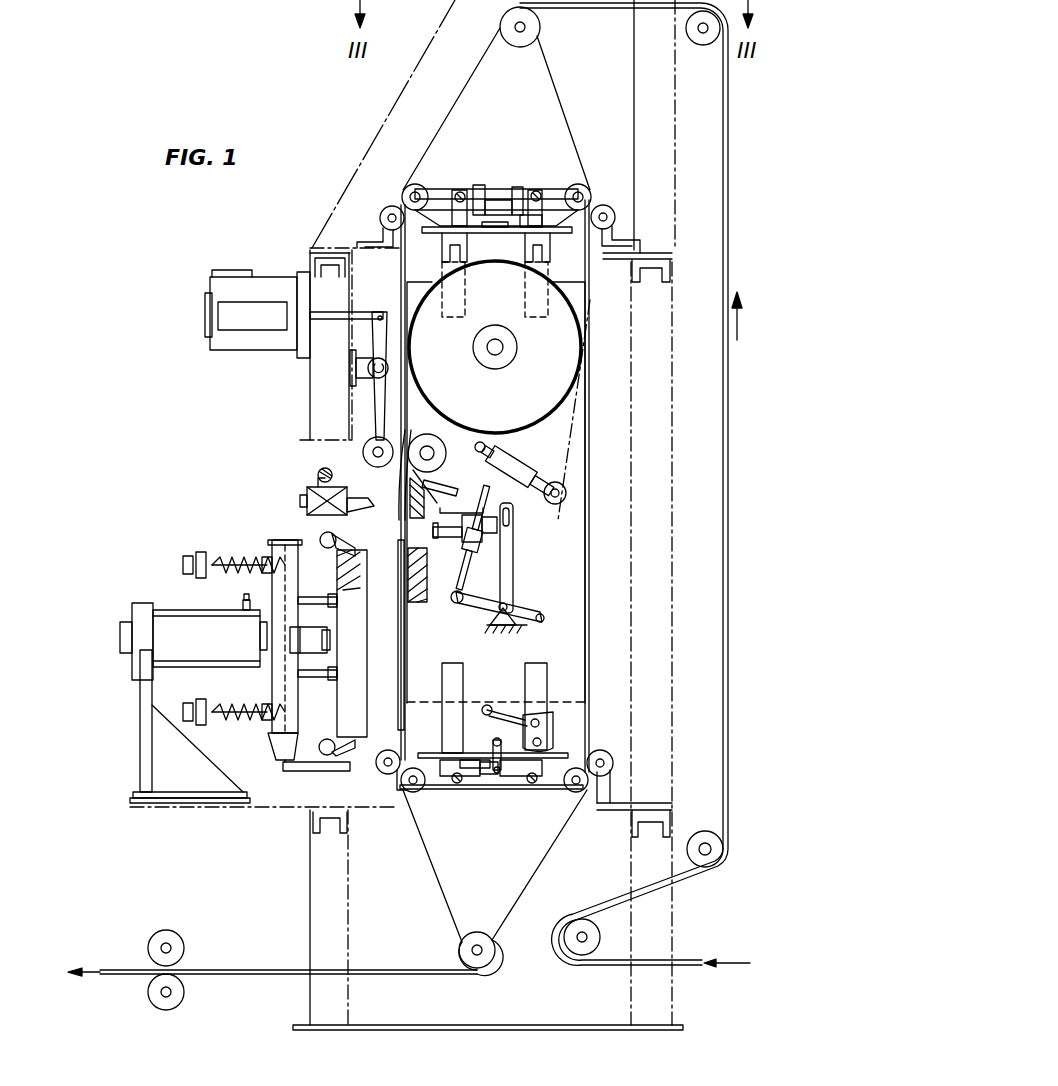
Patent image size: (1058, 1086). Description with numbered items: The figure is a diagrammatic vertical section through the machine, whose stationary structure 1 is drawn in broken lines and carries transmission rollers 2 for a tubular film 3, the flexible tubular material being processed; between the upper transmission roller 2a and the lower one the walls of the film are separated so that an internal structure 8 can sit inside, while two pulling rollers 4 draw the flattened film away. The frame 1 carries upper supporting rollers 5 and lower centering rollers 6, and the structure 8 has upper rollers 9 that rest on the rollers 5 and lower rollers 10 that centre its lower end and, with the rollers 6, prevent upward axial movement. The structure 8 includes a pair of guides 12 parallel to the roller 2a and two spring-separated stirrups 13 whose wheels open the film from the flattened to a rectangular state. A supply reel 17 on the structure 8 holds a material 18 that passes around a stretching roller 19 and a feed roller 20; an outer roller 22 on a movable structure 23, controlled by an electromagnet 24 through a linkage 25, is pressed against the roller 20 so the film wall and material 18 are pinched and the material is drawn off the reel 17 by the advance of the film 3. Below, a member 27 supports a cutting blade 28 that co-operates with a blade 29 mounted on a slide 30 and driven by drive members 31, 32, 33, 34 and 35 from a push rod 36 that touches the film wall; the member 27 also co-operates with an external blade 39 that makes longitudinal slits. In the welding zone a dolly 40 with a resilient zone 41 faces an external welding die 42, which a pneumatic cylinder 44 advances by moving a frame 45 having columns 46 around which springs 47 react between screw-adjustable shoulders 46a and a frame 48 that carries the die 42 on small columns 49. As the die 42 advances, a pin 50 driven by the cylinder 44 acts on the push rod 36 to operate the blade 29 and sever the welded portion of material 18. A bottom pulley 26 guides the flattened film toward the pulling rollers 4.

The stationary structure 1 is at (398, 92).
The transmission rollers 2 is at (703, 46).
The upper transmission roller 2a is at (540, 33).
The tubular film 3 is at (552, 115).
The pulling rollers 4 is at (184, 985).
The upper supporting rollers 5 is at (392, 206).
The lower centering rollers 6 is at (388, 750).
The internal structure 8 is at (503, 240).
The upper rollers 9 is at (428, 188).
The lower rollers 10 is at (418, 792).
The guides 12 is at (536, 189).
The stirrups 13 is at (548, 195).
The supply reel 17 is at (550, 405).
The material 18 is at (568, 455).
The stretching roller 19 is at (562, 505).
The feed roller 20 is at (445, 462).
The outer roller 22 is at (366, 442).
The movable structure 23 is at (370, 400).
The electromagnet 24 is at (268, 350).
The linkage 25 is at (363, 312).
The bottom pulley 26 is at (464, 936).
The member 27 is at (400, 497).
The cutting blade 28 is at (402, 528).
The blade 29 is at (452, 513).
The slide 30 is at (470, 543).
The drive member 31 is at (513, 556).
The drive member 32 is at (510, 590).
The drive member 33 is at (498, 715).
The drive member 34 is at (530, 712).
The drive member 35 is at (493, 745).
The push rod 36 is at (488, 776).
The external blade 39 is at (350, 533).
The dolly 40 is at (416, 612).
The resilient zone 41 is at (410, 690).
The welding die 42 is at (348, 614).
The pneumatic cylinder 44 is at (180, 612).
The frame 45 is at (288, 540).
The columns 46 is at (184, 563).
The shoulders 46a is at (200, 552).
The springs 47 is at (238, 556).
The frame 48 is at (270, 688).
The small columns 49 is at (300, 688).
The pin 50 is at (340, 773).